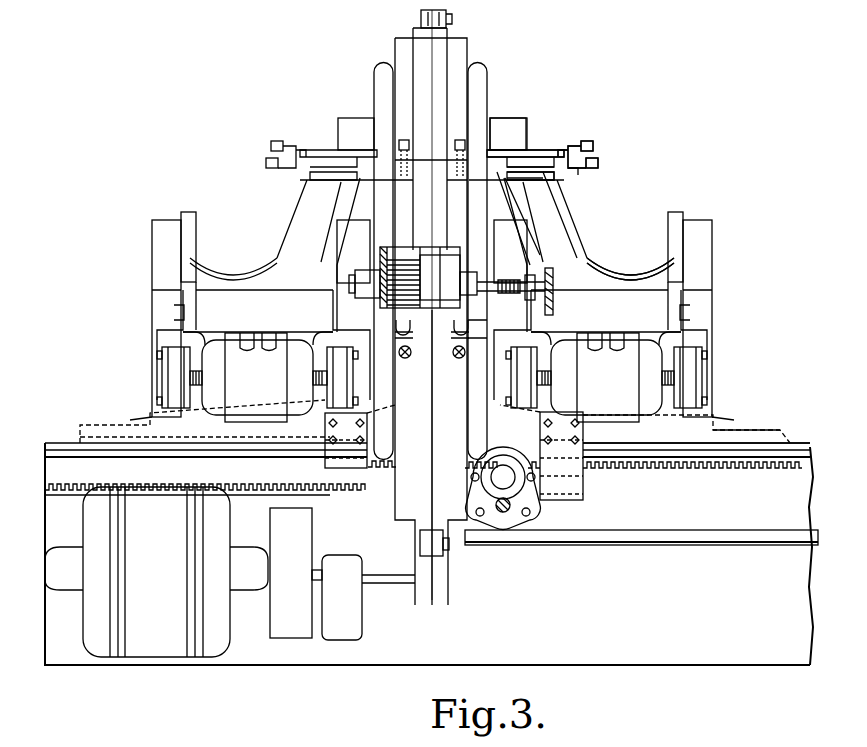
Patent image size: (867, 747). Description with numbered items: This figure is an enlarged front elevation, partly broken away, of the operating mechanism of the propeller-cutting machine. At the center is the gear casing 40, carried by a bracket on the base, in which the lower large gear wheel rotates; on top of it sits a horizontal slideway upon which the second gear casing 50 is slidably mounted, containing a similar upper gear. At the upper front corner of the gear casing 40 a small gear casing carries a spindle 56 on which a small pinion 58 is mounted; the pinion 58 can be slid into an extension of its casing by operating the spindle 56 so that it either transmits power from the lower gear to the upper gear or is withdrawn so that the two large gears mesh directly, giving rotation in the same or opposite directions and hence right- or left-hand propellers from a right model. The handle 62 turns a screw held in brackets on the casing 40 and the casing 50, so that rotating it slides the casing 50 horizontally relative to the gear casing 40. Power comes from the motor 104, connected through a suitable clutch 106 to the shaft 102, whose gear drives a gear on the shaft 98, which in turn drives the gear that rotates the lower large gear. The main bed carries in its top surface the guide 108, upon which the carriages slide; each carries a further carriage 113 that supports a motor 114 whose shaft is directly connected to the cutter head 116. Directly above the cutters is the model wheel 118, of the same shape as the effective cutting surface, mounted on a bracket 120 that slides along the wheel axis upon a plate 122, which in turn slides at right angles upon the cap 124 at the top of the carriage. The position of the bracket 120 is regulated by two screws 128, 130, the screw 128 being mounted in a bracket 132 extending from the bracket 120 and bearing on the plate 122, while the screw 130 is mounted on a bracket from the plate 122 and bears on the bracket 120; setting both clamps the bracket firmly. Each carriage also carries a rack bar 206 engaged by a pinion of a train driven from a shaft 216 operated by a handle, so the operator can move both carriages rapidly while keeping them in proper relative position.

The gear casing 40 is at (431, 392).
The second gear casing 50 is at (431, 305).
The spindle 56 is at (445, 283).
The small pinion 58 is at (387, 257).
The handle 62 is at (553, 275).
The shaft 98 is at (620, 541).
The shaft 102 is at (413, 560).
The motor 104 is at (151, 628).
The clutch 106 is at (291, 625).
The guide 108 is at (800, 443).
The carriage 113 is at (432, 345).
The motor 114 is at (432, 377).
The cutter head 116 is at (478, 350).
The model wheel 118 is at (478, 95).
The bracket 120 is at (511, 140).
The plate 122 is at (533, 162).
The cap 124 is at (585, 226).
The screw 128 is at (600, 153).
The screw 130 is at (580, 146).
The bracket 132 is at (572, 170).
The rack bar 206 is at (66, 483).
The shaft 216 is at (505, 510).